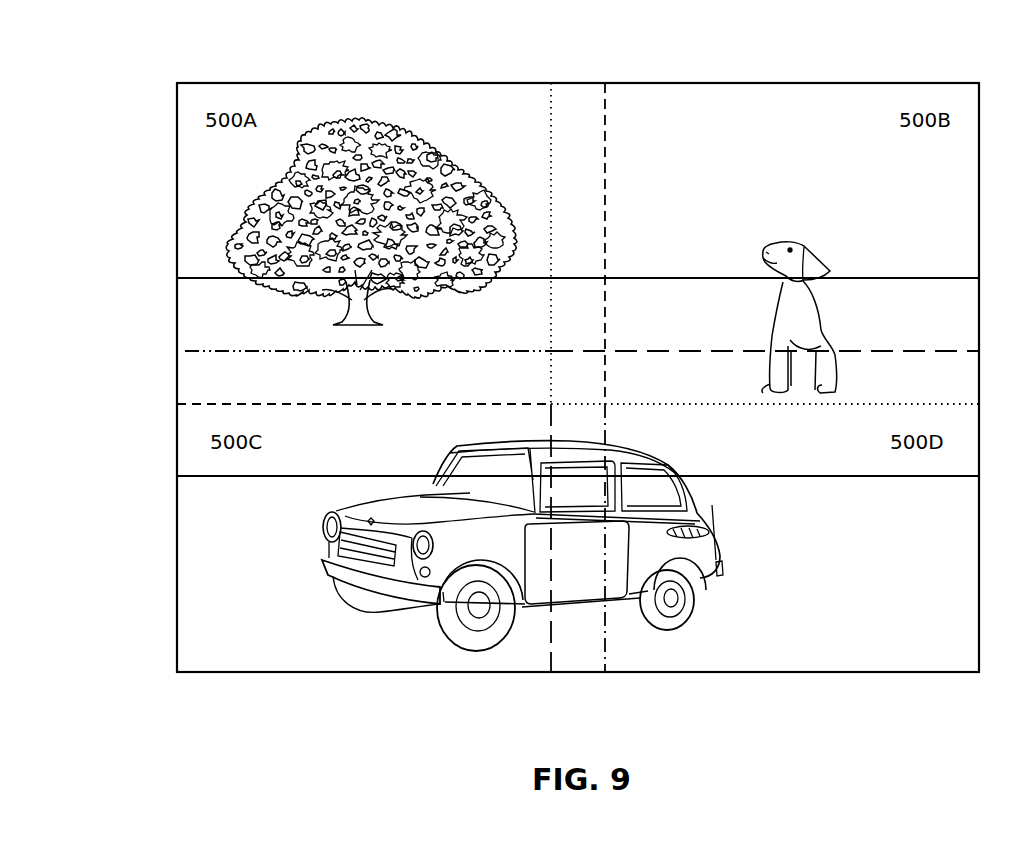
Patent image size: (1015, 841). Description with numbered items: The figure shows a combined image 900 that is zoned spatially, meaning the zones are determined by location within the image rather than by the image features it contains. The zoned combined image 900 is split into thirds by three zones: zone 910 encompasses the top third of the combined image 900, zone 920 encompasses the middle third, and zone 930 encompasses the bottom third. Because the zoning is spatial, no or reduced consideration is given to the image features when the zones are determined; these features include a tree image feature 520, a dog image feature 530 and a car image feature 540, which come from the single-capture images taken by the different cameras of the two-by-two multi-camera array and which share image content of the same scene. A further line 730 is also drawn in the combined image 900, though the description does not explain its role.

The combined image 900 is at (71, 20).
The zone 910 is at (177, 158).
The zone 920 is at (177, 372).
The zone 930 is at (177, 573).
The partition lines 730 is at (742, 377).
The tree image feature 520 is at (260, 193).
The dog image feature 530 is at (826, 302).
The car image feature 540 is at (720, 540).